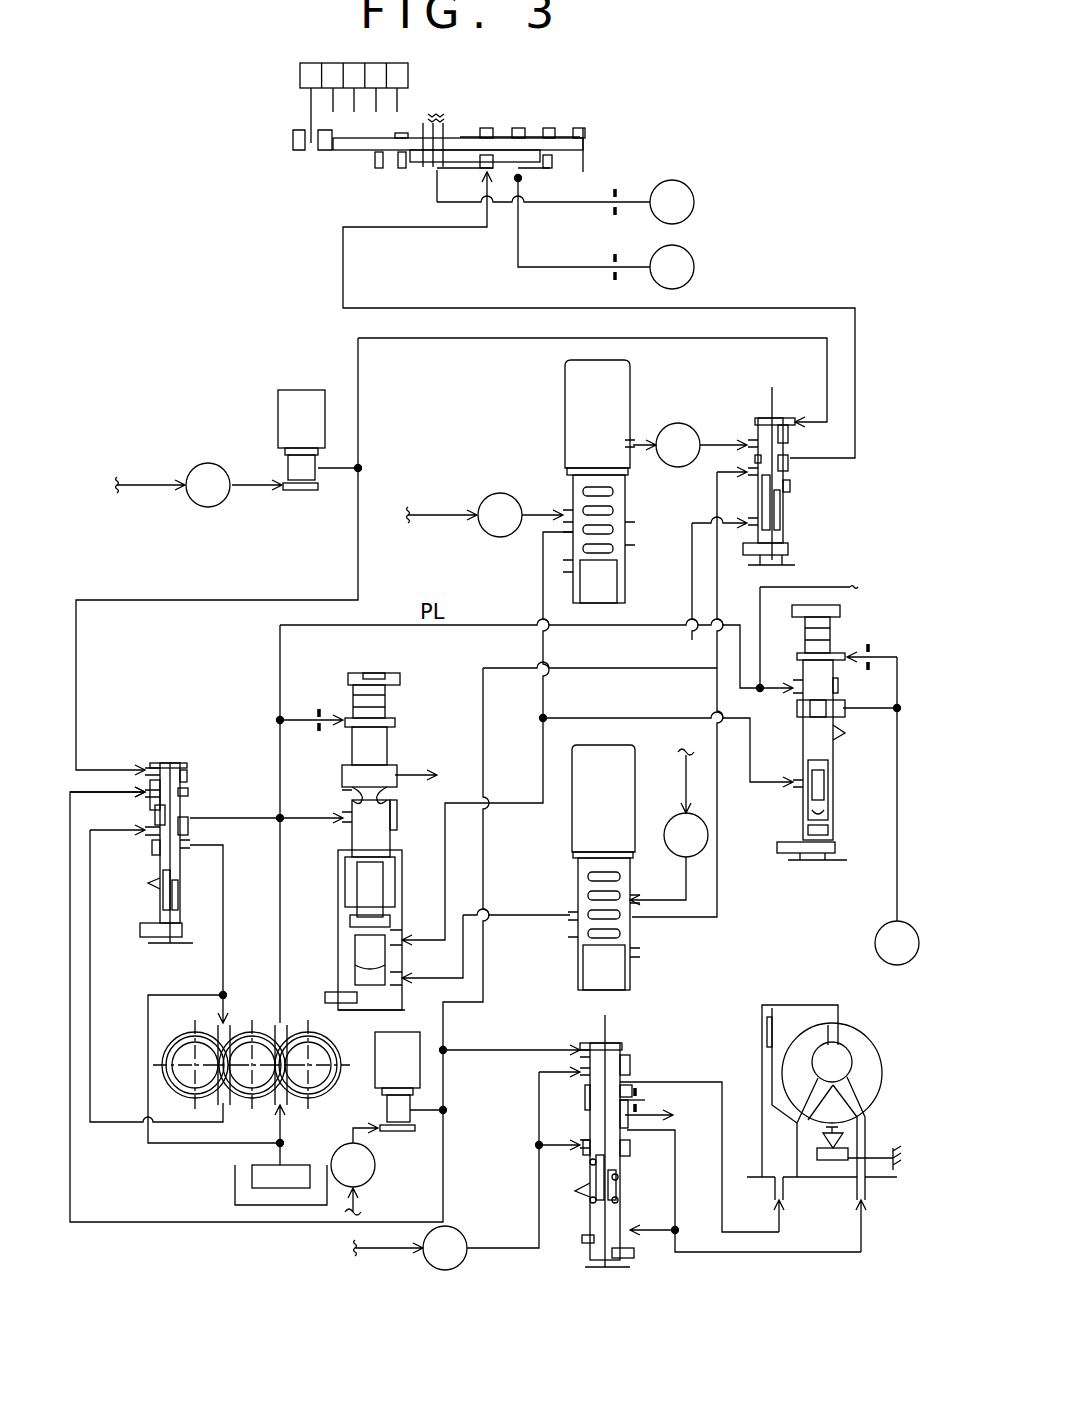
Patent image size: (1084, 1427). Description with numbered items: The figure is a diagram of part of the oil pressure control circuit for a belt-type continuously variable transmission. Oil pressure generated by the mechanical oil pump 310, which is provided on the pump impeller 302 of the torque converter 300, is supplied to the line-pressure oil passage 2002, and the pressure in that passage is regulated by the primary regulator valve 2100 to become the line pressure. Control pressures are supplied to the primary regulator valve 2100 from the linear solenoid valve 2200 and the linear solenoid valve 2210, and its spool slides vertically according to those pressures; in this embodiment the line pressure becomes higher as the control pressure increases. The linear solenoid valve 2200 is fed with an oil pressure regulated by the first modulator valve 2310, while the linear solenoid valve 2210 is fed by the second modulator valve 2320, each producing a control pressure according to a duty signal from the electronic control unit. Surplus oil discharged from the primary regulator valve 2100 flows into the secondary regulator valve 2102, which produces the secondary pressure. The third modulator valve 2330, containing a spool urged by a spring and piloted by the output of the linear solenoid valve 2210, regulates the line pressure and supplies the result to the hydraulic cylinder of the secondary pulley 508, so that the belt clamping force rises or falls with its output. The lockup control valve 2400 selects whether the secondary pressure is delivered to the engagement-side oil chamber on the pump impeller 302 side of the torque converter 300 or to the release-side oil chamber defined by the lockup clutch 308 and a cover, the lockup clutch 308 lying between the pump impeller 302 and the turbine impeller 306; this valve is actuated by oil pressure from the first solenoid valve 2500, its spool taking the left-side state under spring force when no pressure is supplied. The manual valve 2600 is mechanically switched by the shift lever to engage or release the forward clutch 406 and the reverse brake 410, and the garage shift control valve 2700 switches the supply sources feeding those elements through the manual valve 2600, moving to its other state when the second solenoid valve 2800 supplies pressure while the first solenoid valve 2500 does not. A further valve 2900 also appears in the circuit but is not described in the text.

The manual valve 2600 is at (540, 90).
The reverse brake 410 is at (723, 182).
The forward clutch 406 is at (723, 247).
The second solenoid valve 2800 is at (278, 402).
The first modulator valve 2310 is at (208, 507).
The linear solenoid valve 2210 is at (565, 402).
The second modulator valve 2320 is at (678, 423).
The garage shift control valve 2700 is at (803, 510).
The third modulator valve 2330 is at (840, 818).
The linear solenoid valve 2200 is at (572, 896).
The torque converter 300 is at (808, 1000).
The pump impeller 302 is at (858, 1032).
The turbine impeller 306 is at (798, 1038).
The lockup clutch 308 is at (770, 1063).
The secondary pulley 508 is at (875, 945).
The lockup control valve 2400 is at (580, 1225).
The secondary regulator valve 2102 is at (447, 1272).
The first solenoid valve 2500 is at (420, 1040).
The line-pressure oil passage 2002 is at (280, 652).
The switching valve 2900 is at (167, 760).
The mechanical oil pump 310 is at (244, 1007).
The primary regulator valve 2100 is at (418, 720).